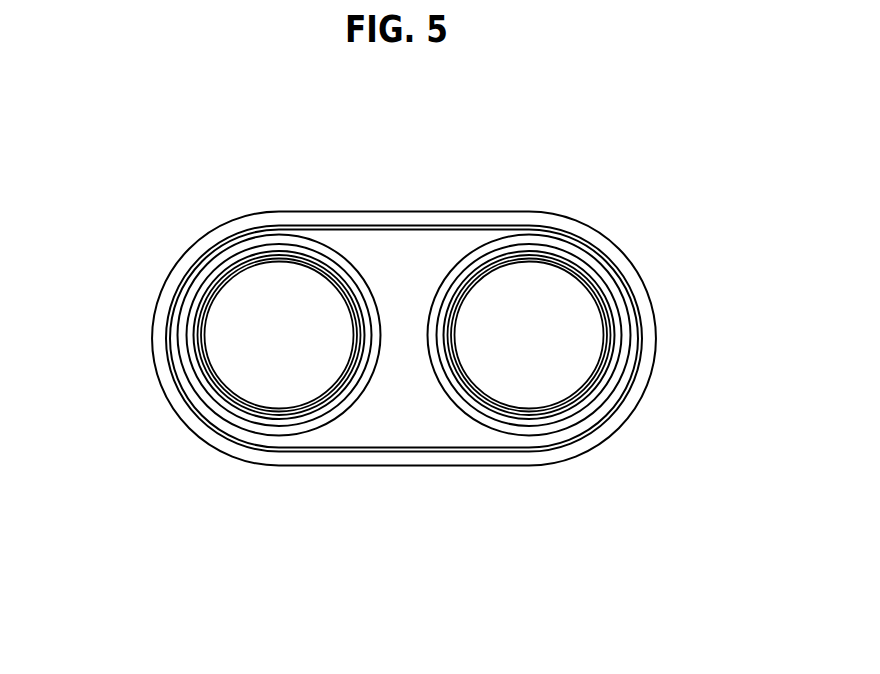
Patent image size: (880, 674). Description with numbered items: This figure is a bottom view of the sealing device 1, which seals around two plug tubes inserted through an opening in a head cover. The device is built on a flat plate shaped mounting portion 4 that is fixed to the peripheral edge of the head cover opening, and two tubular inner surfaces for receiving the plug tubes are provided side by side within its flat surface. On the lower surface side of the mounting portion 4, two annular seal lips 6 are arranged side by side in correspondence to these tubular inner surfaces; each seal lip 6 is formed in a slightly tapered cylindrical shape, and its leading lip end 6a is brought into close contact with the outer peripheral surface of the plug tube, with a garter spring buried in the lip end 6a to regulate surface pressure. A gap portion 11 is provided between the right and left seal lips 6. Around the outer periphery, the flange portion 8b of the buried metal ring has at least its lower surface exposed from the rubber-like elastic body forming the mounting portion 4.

The sealing device 1 is at (237, 207).
The mounting portion 4 is at (405, 253).
The seal lip 6 is at (185, 327).
The lip end 6a is at (207, 380).
The flange portion 8b is at (602, 242).
The gap portion 11 is at (405, 362).